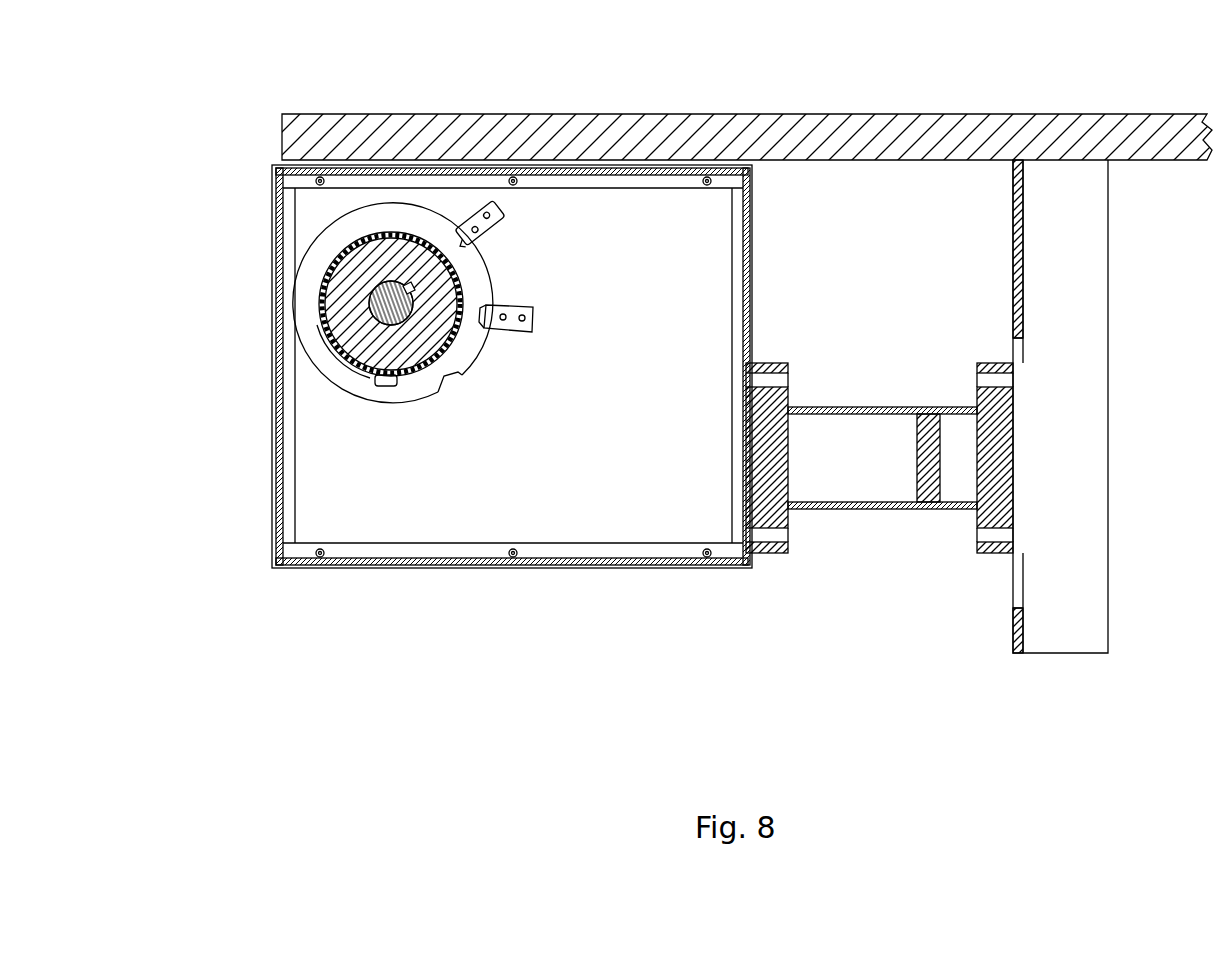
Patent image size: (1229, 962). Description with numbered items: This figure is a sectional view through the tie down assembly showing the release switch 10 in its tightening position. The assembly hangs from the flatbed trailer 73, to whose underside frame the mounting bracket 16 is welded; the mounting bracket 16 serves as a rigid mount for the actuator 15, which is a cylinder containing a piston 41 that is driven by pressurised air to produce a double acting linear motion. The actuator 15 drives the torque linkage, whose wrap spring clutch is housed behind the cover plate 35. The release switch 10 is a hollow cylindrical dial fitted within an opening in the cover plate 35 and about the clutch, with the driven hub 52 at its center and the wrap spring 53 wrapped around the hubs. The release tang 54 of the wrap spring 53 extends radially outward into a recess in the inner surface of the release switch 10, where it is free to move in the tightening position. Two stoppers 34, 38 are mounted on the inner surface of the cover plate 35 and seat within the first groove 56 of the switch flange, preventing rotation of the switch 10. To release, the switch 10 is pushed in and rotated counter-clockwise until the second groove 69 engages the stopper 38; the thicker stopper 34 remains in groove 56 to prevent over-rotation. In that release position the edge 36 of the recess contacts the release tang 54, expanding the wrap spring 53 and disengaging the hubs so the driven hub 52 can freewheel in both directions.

The release switch 10 is at (338, 237).
The actuator 15 is at (831, 510).
The mounting bracket 16 is at (1066, 585).
The stopper 34 is at (482, 213).
The cover plate 35 is at (578, 490).
The edge of recess 36 is at (357, 330).
The stopper 38 is at (511, 306).
The piston 41 is at (927, 465).
The driven hub 52 is at (417, 255).
The wrap spring 53 is at (375, 235).
The release tang 54 is at (375, 377).
The first circumferentially extending recessed groove 56 is at (482, 262).
The second circumferentially extending recessed groove 69 is at (441, 386).
The flatbed trailer 73 is at (769, 140).